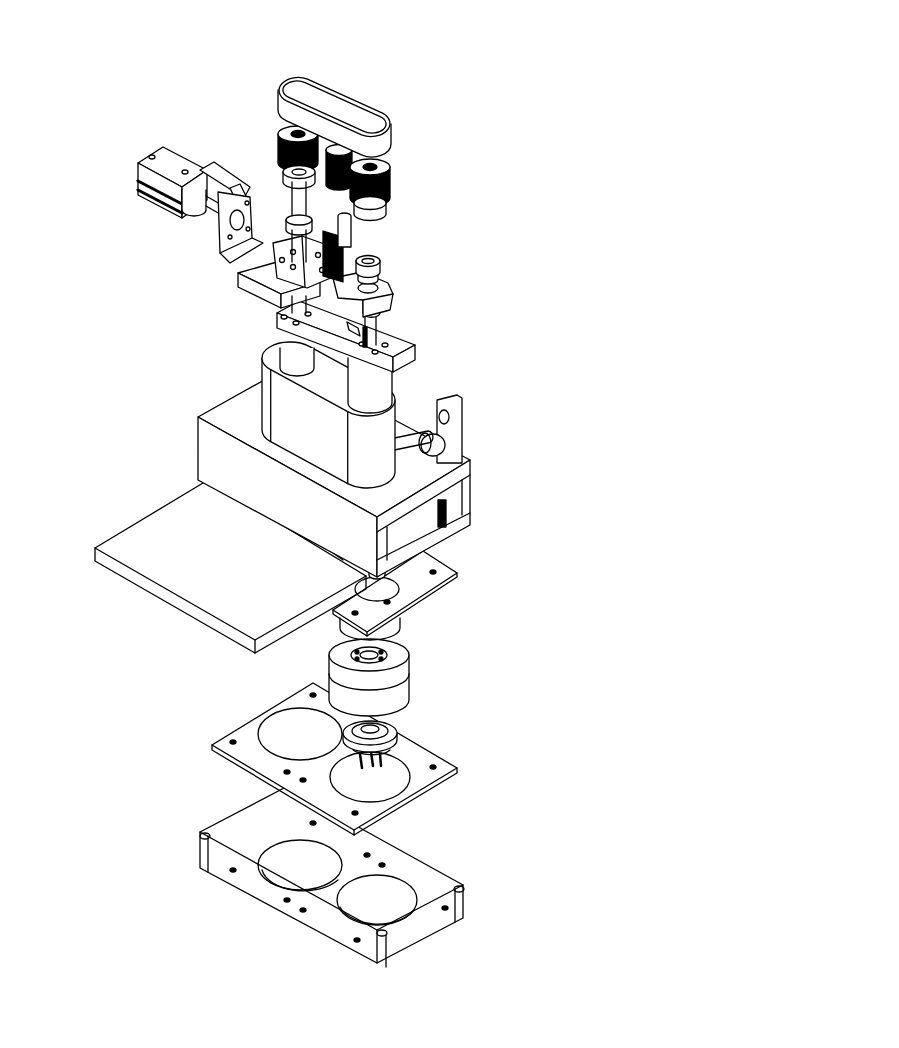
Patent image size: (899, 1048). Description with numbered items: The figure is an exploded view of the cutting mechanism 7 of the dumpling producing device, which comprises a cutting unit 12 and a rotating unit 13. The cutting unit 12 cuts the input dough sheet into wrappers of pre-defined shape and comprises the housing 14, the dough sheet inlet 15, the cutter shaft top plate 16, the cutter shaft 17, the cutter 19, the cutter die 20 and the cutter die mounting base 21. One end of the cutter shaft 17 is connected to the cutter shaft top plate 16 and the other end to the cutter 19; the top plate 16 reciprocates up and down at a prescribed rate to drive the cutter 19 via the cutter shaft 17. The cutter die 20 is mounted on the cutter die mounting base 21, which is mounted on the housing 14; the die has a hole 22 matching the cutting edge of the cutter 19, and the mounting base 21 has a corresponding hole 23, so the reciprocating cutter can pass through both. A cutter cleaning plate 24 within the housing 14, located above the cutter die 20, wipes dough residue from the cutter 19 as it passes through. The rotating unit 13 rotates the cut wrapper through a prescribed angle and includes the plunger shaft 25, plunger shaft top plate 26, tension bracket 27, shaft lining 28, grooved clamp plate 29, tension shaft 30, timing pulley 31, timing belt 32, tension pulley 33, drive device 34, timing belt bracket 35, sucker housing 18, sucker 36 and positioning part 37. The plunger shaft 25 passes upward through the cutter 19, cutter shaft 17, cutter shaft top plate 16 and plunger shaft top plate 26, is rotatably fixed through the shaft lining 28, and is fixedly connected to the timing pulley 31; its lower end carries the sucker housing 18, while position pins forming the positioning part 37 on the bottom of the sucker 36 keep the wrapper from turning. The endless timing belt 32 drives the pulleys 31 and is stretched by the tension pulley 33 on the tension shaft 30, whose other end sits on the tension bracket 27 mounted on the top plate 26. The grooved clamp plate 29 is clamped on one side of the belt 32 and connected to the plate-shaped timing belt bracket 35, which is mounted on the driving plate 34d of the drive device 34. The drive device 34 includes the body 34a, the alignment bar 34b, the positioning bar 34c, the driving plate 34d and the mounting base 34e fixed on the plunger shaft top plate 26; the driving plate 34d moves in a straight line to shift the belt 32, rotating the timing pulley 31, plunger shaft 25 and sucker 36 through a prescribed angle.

The cutting mechanism 7 is at (316, 516).
The cutting unit 12 is at (490, 461).
The rotating unit 13 is at (384, 161).
The housing 14 is at (298, 417).
The dough sheet inlet 15 is at (190, 513).
The cutter shaft top plate 16 is at (400, 368).
The cutter shaft 17 is at (383, 392).
The sucker housing 18 is at (390, 628).
The cutter 19 is at (403, 693).
The cutter die 20 is at (383, 765).
The cutter die mounting base 21 is at (373, 877).
The hole 22 is at (273, 733).
The hole 23 is at (395, 902).
The cutter cleaning plate 24 is at (457, 575).
The plunger shaft 25 is at (373, 343).
The plunger shaft top plate 26 is at (382, 307).
The tension bracket 27 is at (367, 278).
The shaft lining 28 is at (380, 263).
The grooved clamp plate 29 is at (344, 240).
The tension shaft 30 is at (353, 232).
The timing pulley 31 is at (277, 143).
The timing belt 32 is at (385, 107).
The tension pulley 33 is at (336, 150).
The drive device 34 is at (166, 190).
The body 34a is at (188, 163).
The alignment bar 34b is at (210, 175).
The positioning bar 34c is at (197, 197).
The driving plate 34d is at (247, 180).
The mounting base 34e is at (260, 213).
The timing belt bracket 35 is at (273, 263).
The sucker 36 is at (397, 733).
The positioning part 37 is at (387, 755).